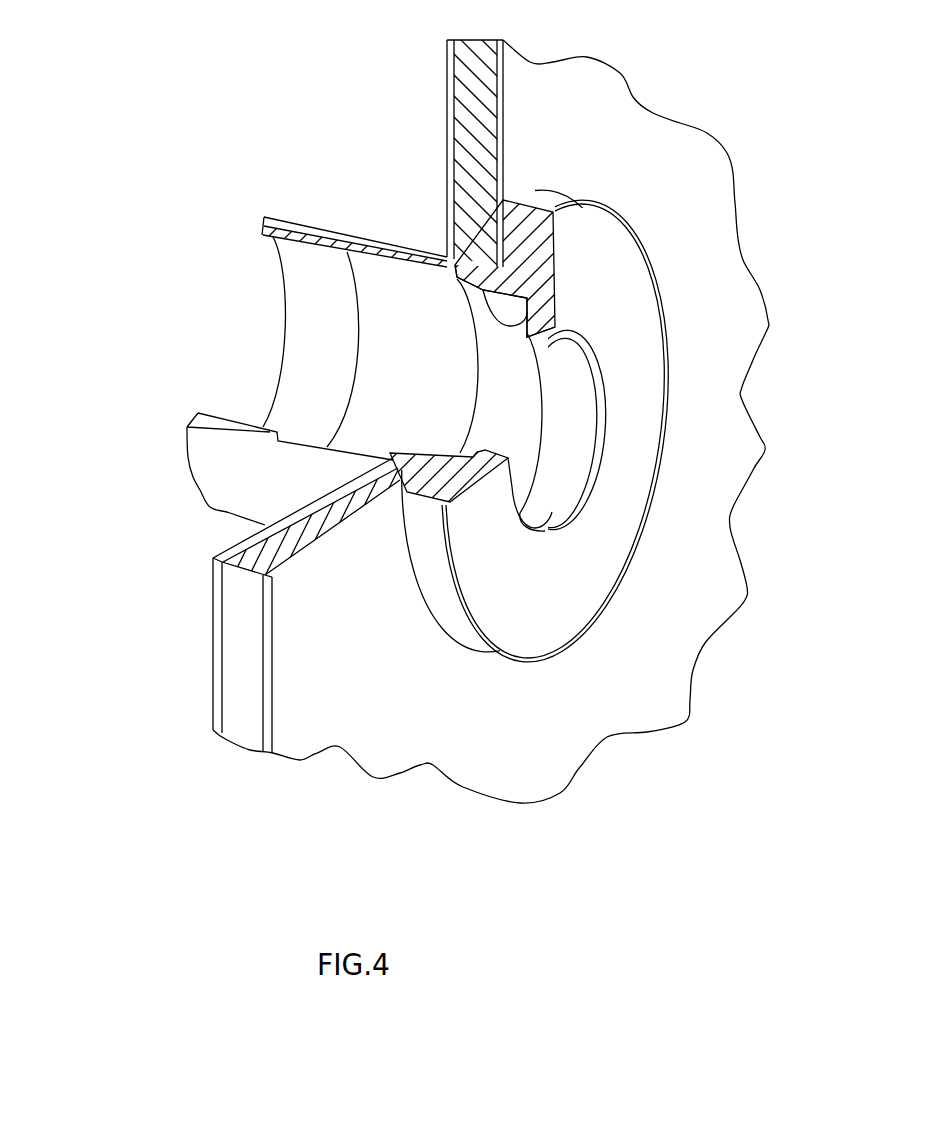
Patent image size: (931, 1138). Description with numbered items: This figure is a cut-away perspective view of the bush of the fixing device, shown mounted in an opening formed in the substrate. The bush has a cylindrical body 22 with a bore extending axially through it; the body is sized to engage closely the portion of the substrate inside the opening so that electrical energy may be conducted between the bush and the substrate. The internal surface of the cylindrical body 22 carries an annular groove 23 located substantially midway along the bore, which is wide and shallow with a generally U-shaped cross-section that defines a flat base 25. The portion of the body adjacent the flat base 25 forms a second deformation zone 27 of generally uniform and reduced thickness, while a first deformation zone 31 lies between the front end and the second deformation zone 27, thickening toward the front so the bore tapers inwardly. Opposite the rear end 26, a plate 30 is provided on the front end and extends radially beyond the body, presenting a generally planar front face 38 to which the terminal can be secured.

The cylindrical body 22 is at (307, 372).
The annular groove 23 is at (415, 278).
The flat base 25 is at (345, 245).
The rear end 26 is at (212, 482).
The second deformation zone 27 is at (355, 233).
The plate 30 is at (537, 595).
The first deformation zone 31 is at (555, 327).
The front face 38 is at (617, 257).